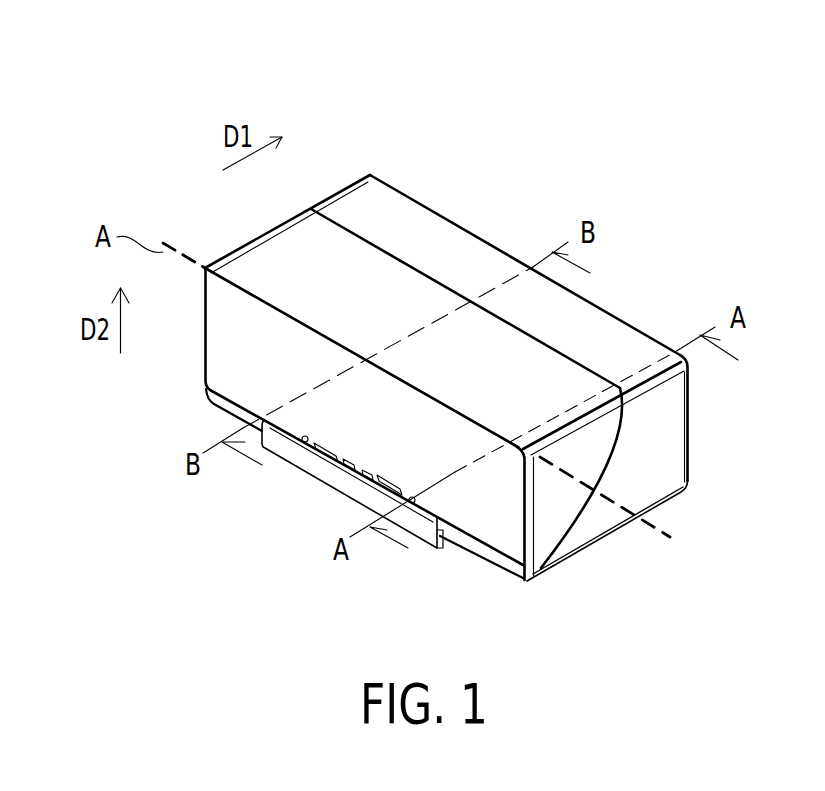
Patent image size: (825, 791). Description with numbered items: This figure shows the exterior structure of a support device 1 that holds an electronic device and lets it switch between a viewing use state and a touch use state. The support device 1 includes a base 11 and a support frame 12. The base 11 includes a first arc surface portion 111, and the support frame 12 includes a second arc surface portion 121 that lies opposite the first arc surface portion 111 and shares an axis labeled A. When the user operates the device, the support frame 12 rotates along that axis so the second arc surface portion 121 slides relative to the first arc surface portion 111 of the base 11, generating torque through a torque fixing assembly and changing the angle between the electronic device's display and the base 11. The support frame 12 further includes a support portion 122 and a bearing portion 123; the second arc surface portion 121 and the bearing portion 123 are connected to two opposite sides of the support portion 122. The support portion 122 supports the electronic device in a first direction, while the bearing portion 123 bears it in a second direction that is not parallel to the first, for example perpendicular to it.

The support device 1 is at (40, 94).
The base 11 is at (559, 378).
The first arc surface portion 111 is at (623, 452).
The support frame 12 is at (398, 392).
The second arc surface portion 121 is at (583, 506).
The support portion 122 is at (215, 337).
The bearing portion 123 is at (310, 463).